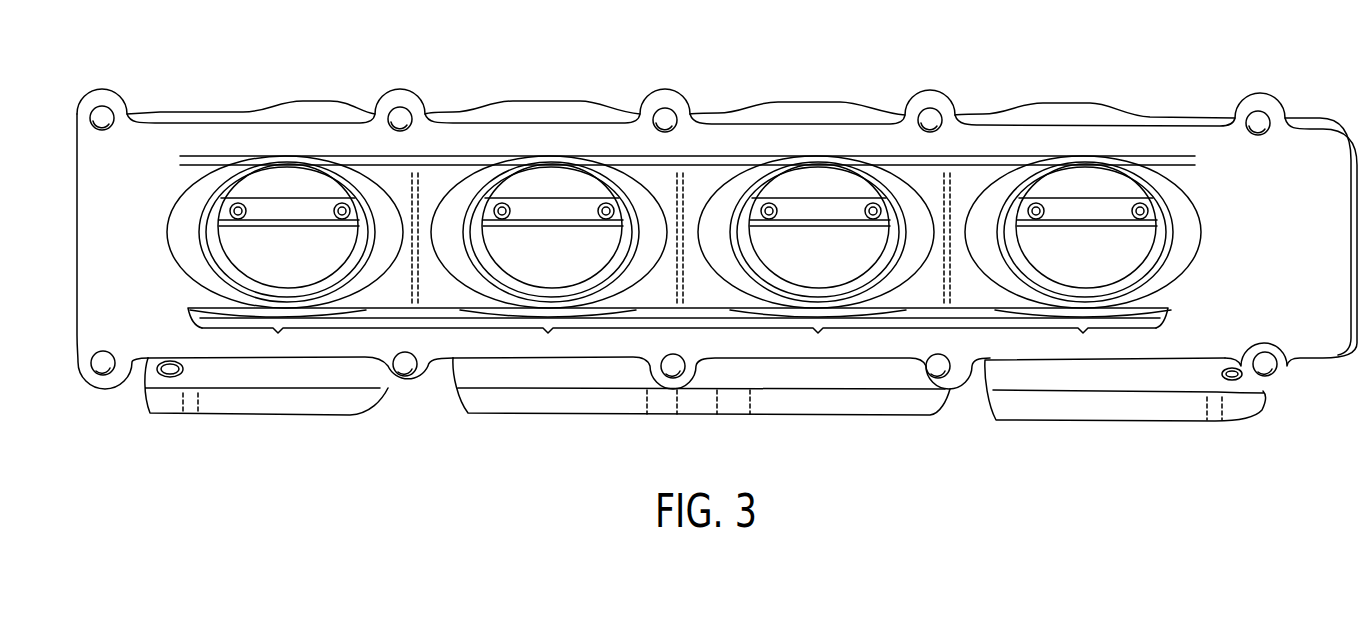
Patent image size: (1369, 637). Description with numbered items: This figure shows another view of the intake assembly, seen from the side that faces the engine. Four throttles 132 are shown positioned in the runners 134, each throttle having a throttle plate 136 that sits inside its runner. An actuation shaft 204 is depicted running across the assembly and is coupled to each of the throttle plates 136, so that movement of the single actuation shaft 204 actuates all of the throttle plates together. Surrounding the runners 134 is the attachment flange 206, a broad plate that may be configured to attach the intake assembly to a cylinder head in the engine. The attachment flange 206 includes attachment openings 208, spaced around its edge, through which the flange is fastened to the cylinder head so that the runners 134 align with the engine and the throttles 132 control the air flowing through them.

The throttle 132 is at (284, 166).
The runner 134 is at (278, 333).
The throttle plate 136 is at (276, 265).
The actuation shaft 204 is at (267, 207).
The attachment flange 206 is at (114, 257).
The attachment opening 208 is at (104, 116).